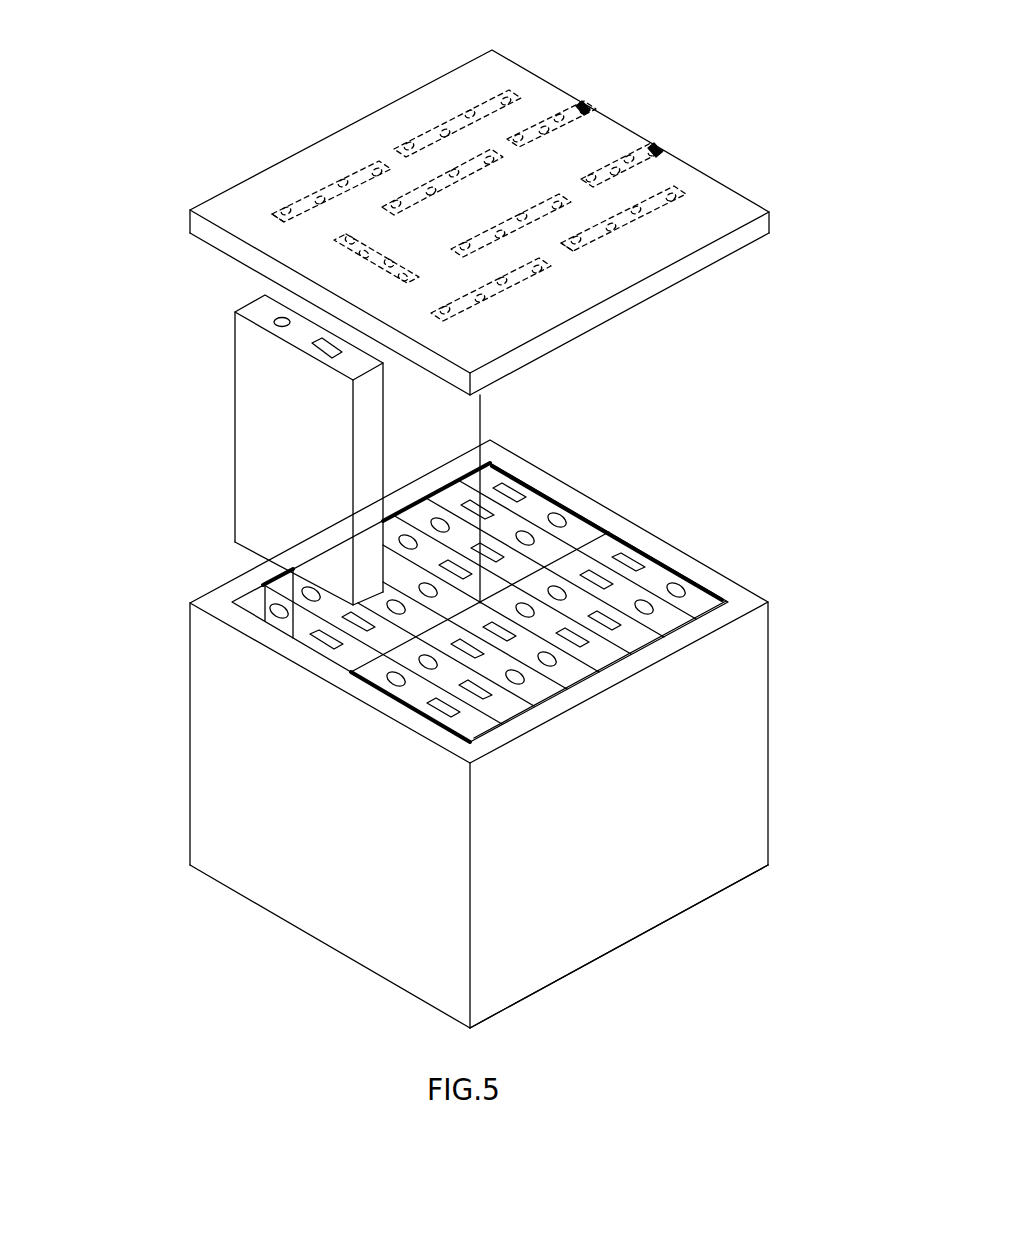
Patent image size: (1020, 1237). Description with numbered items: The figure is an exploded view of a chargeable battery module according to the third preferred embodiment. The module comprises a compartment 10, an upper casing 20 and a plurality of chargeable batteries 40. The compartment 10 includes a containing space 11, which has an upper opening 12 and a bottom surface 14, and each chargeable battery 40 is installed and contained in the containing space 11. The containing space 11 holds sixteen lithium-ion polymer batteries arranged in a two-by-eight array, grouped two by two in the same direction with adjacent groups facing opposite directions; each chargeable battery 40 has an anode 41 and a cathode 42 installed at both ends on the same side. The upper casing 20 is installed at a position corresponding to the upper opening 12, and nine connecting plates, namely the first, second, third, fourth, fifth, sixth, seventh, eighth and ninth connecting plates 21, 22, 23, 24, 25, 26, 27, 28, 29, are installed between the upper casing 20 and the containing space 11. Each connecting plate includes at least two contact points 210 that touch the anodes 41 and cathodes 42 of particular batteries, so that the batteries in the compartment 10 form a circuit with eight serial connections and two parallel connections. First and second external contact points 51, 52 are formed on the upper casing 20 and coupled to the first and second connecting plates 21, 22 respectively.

The compartment 10 is at (260, 853).
The containing space 11 is at (278, 612).
The upper opening 12 is at (705, 605).
The bottom surface 14 is at (520, 1003).
The upper casing 20 is at (313, 165).
The first connecting plate 21 is at (488, 100).
The second connecting plate 22 is at (537, 127).
The third connecting plate 23 is at (640, 162).
The fourth connecting plate 24 is at (647, 213).
The fifth connecting plate 25 is at (440, 178).
The sixth connecting plate 26 is at (520, 227).
The seventh connecting plate 27 is at (362, 172).
The eighth connecting plate 28 is at (412, 278).
The ninth connecting plate 29 is at (477, 307).
The contact points 210 is at (283, 213).
The chargeable battery 40 is at (263, 443).
The anode 41 is at (275, 320).
The cathode 42 is at (315, 345).
The first external contact point 51 is at (583, 108).
The second external contact point 52 is at (655, 150).